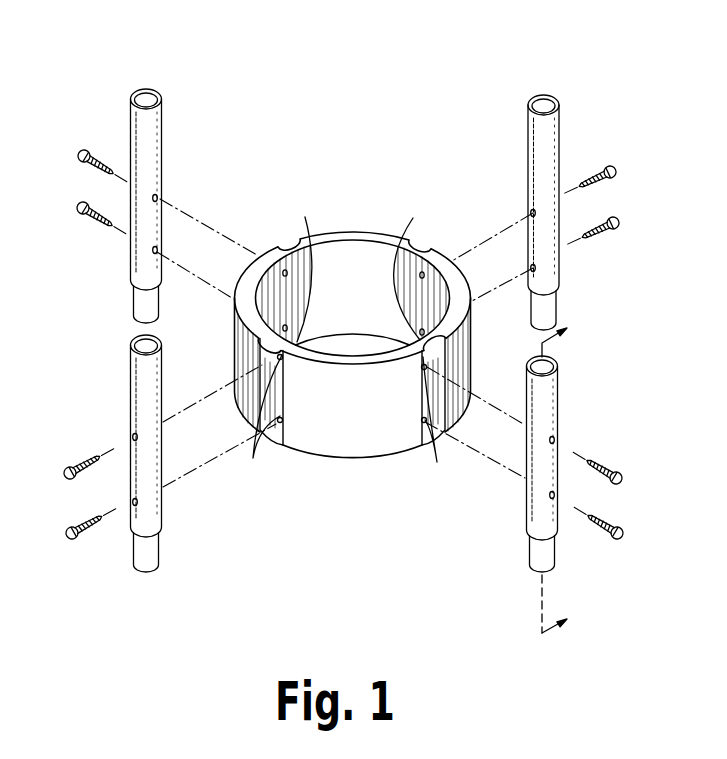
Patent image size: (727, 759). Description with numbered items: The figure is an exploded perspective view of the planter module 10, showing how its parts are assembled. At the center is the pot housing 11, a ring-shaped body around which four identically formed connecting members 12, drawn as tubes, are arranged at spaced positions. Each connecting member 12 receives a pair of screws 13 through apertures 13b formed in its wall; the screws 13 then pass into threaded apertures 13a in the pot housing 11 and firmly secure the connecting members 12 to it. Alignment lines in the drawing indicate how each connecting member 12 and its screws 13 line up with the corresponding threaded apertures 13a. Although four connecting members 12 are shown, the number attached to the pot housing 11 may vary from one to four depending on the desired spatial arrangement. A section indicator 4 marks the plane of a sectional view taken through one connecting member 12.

The planter module 10 is at (312, 175).
The pot housing 11 is at (366, 452).
The connecting members 12 is at (162, 133).
The screws 13 is at (78, 149).
The threaded apertures 13a is at (345, 340).
The apertures 13b is at (158, 198).
The section line 4- 4 is at (566, 473).